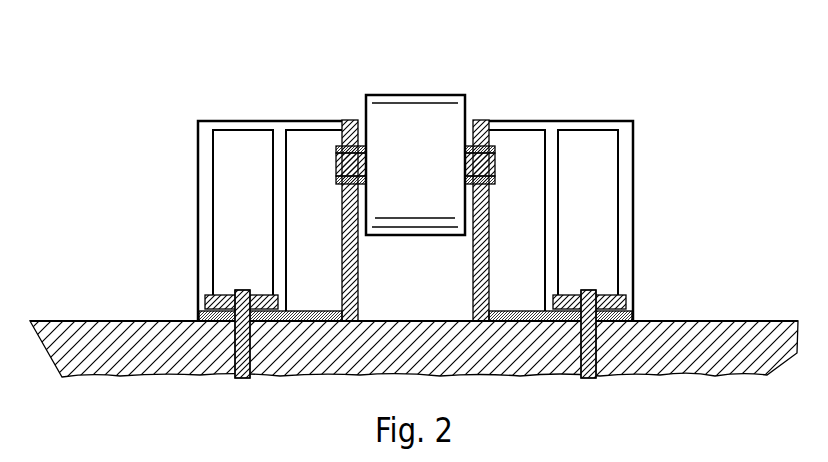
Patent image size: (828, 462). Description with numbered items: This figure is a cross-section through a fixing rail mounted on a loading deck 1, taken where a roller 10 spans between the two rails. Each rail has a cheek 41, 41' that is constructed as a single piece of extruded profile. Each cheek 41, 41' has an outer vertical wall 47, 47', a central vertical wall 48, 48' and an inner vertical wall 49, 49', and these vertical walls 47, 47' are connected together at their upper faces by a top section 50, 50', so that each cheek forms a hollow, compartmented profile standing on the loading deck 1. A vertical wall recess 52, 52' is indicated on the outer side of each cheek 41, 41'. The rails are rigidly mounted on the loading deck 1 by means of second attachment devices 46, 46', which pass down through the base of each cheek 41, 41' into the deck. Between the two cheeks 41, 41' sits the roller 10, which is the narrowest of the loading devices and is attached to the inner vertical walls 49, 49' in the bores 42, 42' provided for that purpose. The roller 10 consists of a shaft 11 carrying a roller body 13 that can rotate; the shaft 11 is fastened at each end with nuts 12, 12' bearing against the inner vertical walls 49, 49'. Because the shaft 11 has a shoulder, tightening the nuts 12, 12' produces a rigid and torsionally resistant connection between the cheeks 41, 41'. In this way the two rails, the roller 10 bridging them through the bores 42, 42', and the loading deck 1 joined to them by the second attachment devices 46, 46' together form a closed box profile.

The loading deck 1 is at (697, 345).
The roller 10 is at (417, 161).
The shaft 11 is at (496, 162).
The nut 12 is at (332, 173).
The nut 12' is at (500, 174).
The roller body 13 is at (447, 120).
The cheek 41 is at (232, 222).
The cheek 41' is at (604, 222).
The first attachment device/bore 42 is at (349, 198).
The first attachment device/bore 42' is at (483, 198).
The second attachment device 46 is at (215, 334).
The second attachment device 46' is at (617, 334).
The outer vertical wall 47 is at (246, 160).
The outer vertical wall 47' is at (589, 160).
The central vertical wall 48 is at (245, 212).
The central vertical wall 48' is at (585, 212).
The inner vertical wall 49 is at (317, 220).
The inner vertical wall 49' is at (516, 220).
The top section 50 is at (270, 193).
The top section 50' is at (560, 193).
The vertical wall recess 52 is at (161, 246).
The vertical wall recess 52' is at (670, 241).